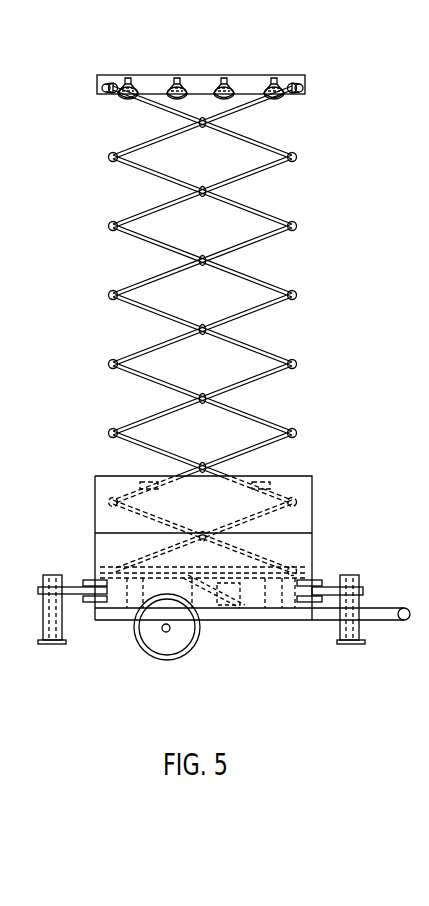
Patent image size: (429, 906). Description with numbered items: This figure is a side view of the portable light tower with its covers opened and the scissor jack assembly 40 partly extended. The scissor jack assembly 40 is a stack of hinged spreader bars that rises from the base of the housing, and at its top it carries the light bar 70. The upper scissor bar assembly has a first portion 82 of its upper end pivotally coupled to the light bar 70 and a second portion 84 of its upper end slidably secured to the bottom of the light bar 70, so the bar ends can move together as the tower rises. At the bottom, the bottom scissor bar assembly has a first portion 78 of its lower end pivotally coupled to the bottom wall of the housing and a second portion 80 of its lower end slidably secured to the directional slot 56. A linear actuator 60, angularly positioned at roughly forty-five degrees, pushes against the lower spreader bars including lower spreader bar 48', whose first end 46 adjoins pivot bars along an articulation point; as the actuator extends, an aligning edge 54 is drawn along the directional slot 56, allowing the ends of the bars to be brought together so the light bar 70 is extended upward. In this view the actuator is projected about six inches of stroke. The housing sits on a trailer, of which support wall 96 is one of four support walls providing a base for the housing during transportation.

The light bar 70 is at (232, 75).
The first portion of the upper end 82 is at (101, 96).
The second portion of the upper end 84 is at (290, 94).
The scissor jack assembly 40 is at (296, 365).
The first end 46 is at (272, 515).
The lower spreader bar 48' is at (184, 526).
The aligning edge 54 is at (293, 569).
The support wall 96 is at (86, 614).
The first portion of the lower end 78 is at (127, 577).
The linear actuator 60 is at (218, 577).
The directional slot 56 is at (265, 576).
The second portion of the lower end 80 is at (292, 577).